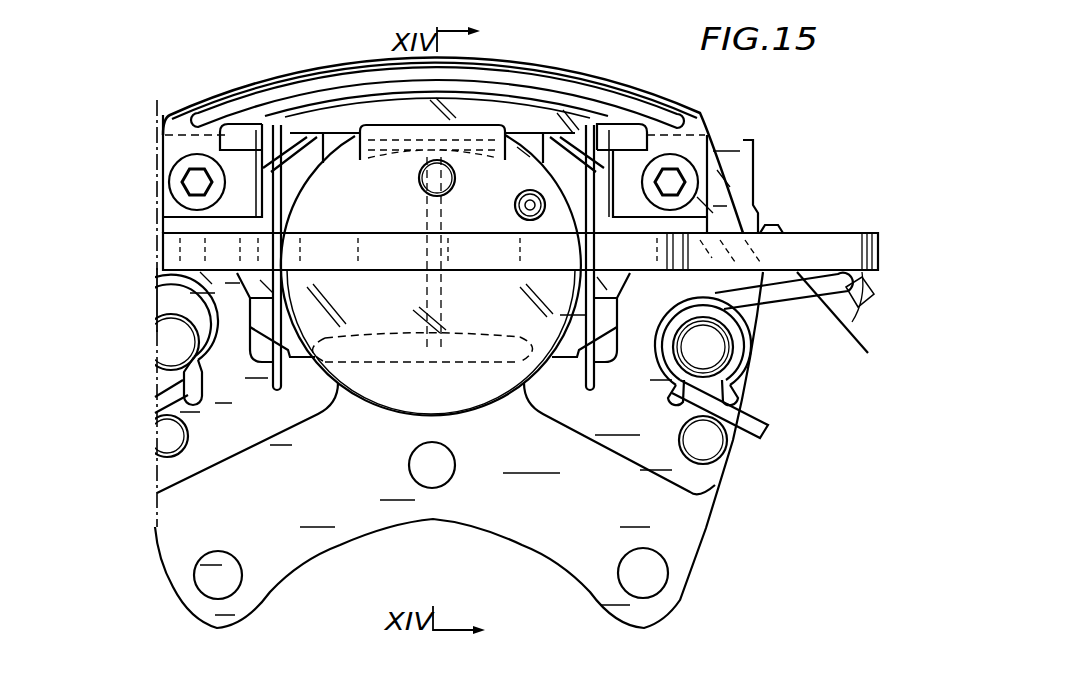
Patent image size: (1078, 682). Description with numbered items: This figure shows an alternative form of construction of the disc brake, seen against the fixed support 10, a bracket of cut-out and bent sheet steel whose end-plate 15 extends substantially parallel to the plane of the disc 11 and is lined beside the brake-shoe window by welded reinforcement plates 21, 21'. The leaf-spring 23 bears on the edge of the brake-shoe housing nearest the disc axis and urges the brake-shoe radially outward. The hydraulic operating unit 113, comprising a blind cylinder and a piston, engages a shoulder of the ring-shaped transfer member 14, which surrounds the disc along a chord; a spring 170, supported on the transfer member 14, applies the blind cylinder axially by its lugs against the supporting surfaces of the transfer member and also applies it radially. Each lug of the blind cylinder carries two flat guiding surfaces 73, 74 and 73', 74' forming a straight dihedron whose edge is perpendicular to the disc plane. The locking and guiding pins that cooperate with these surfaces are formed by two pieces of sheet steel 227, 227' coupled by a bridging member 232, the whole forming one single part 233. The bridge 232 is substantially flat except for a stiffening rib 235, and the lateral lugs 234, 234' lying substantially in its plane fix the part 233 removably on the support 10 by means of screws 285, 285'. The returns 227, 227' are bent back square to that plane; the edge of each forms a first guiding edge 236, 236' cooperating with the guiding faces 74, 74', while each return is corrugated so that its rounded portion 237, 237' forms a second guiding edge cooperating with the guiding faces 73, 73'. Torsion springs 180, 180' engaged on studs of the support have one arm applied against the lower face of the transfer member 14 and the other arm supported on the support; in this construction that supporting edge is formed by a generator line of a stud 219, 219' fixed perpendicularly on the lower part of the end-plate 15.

The fixed support 10 is at (712, 529).
The disc 11 is at (870, 234).
The transfer member 14 is at (813, 232).
The end-plate 15 is at (396, 510).
The reinforcement plate 21 is at (677, 371).
The reinforcement plate 21' is at (189, 372).
The leaf-spring 23 is at (378, 410).
The flat guiding surface 73 is at (564, 257).
The flat guiding surface 73' is at (266, 212).
The flat guiding surface 74 is at (631, 317).
The flat guiding surface 74' is at (302, 269).
The hydraulic operating unit 113 is at (490, 110).
The spring 170 is at (588, 397).
The torsion spring 180 is at (764, 355).
The torsion spring 180' is at (216, 353).
The stud 219 is at (729, 461).
The stud 219' is at (146, 463).
The piece of sheet steel 227 is at (638, 140).
The piece of sheet steel 227' is at (225, 130).
The bridging member 232 is at (362, 70).
The single part 233 is at (556, 65).
The lug 234 is at (745, 165).
The lug 234' is at (175, 104).
The stiffening rib 235 is at (598, 97).
The first guiding edge 236 is at (585, 287).
The first guiding edge 236' is at (315, 280).
The rounded portion 237 is at (585, 178).
The rounded portion 237' is at (248, 129).
The screw 285 is at (726, 168).
The screw 285' is at (166, 182).